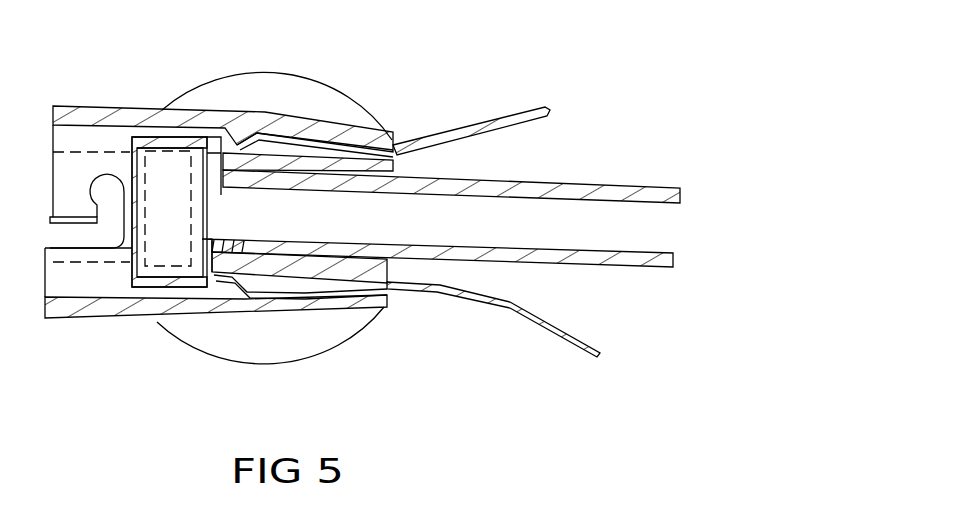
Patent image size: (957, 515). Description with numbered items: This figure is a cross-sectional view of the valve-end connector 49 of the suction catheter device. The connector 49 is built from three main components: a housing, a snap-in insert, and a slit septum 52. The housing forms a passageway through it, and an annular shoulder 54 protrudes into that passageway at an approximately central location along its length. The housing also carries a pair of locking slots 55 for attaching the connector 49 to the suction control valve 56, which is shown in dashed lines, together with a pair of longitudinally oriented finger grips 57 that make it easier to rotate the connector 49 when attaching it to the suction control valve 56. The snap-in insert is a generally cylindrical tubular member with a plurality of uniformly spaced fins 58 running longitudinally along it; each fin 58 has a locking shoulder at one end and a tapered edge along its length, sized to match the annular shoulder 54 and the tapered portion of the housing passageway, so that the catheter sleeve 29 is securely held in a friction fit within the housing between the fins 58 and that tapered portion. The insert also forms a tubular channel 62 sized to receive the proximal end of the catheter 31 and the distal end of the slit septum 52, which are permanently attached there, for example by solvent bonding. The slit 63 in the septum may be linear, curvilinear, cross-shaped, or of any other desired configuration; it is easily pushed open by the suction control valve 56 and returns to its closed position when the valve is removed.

The catheter sleeve 29 is at (430, 135).
The catheter 31 is at (510, 180).
The valve-end connector 49 is at (388, 356).
The slit septum 52 is at (140, 143).
The annular shoulder 54 is at (253, 240).
The locking slots 55 is at (50, 248).
The suction control valve 56 is at (108, 267).
The finger grips 57 is at (305, 95).
The fins 58 is at (258, 150).
The tubular channel 62 is at (387, 284).
The slit 63 is at (116, 125).